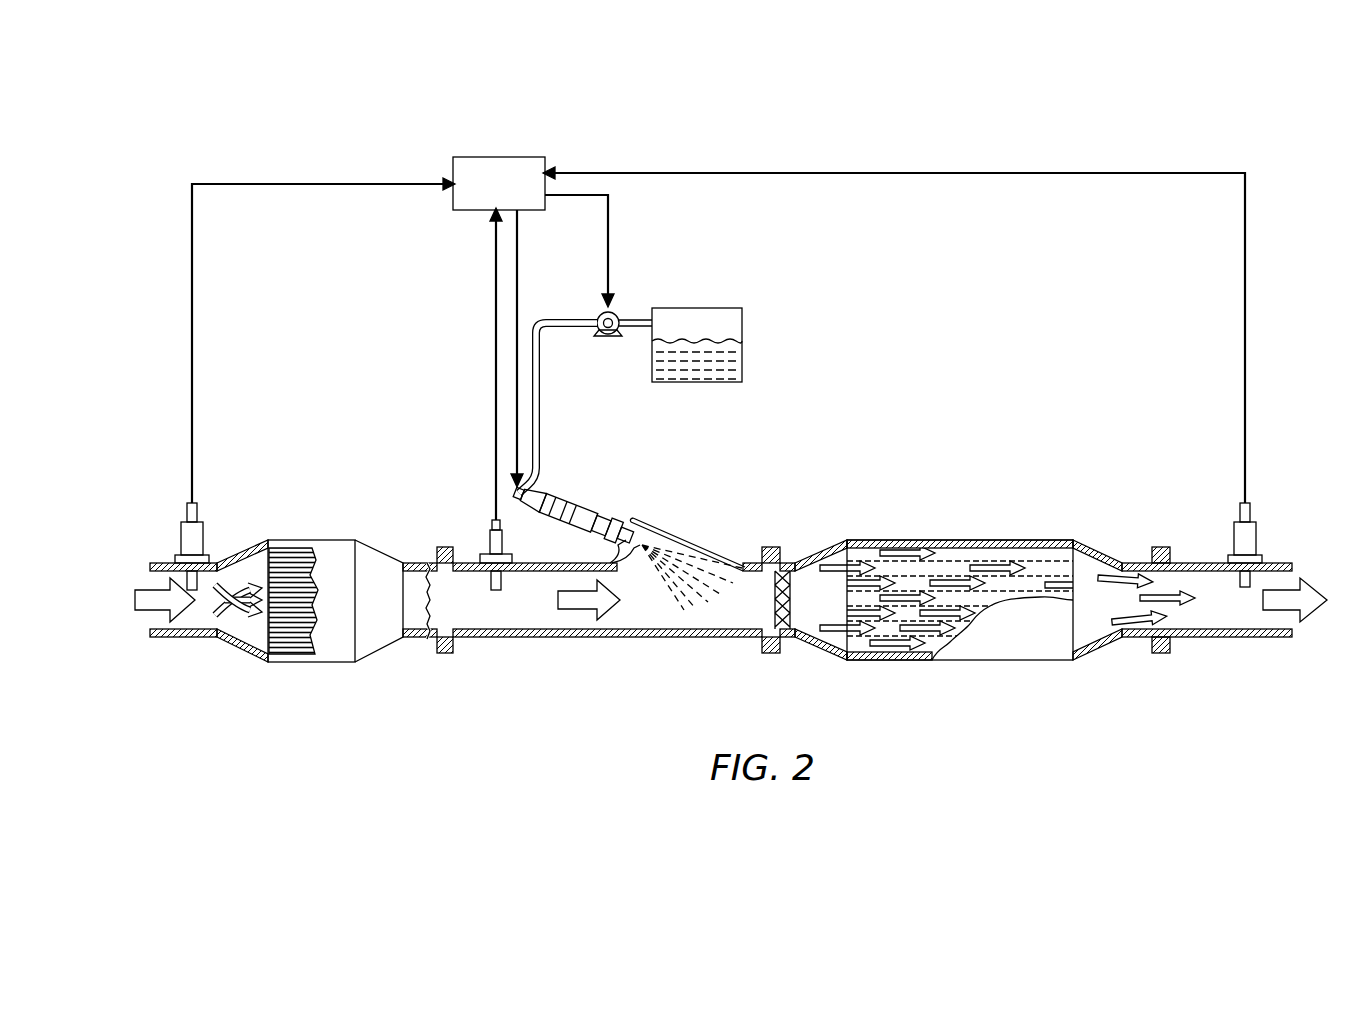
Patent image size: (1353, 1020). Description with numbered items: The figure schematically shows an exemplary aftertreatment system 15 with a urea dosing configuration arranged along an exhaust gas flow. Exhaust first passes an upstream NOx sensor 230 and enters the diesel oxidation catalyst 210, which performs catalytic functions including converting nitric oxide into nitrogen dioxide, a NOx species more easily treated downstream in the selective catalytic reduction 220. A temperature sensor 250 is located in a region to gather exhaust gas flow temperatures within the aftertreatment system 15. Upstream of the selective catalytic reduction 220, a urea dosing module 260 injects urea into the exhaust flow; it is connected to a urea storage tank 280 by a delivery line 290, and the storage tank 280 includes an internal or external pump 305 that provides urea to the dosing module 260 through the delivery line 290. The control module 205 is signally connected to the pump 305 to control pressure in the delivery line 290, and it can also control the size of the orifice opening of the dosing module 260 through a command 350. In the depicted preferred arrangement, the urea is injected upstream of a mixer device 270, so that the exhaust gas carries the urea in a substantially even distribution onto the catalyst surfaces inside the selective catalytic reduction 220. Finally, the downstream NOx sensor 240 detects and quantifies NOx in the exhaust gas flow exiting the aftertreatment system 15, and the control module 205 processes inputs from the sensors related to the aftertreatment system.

The aftertreatment system 15 is at (1158, 137).
The control module 205 is at (499, 183).
The diesel oxidation catalyst 210 is at (328, 545).
The selective catalytic reduction 220 is at (938, 575).
The upstream NOx sensor 230 is at (183, 530).
The downstream NOx sensor 240 is at (1235, 540).
The temperature sensor 250 is at (490, 528).
The urea dosing module 260 is at (600, 512).
The mixer device 270 is at (790, 590).
The urea storage tank 280 is at (697, 345).
The delivery line 290 is at (565, 318).
The pump 305 is at (617, 313).
The command 350 is at (537, 348).